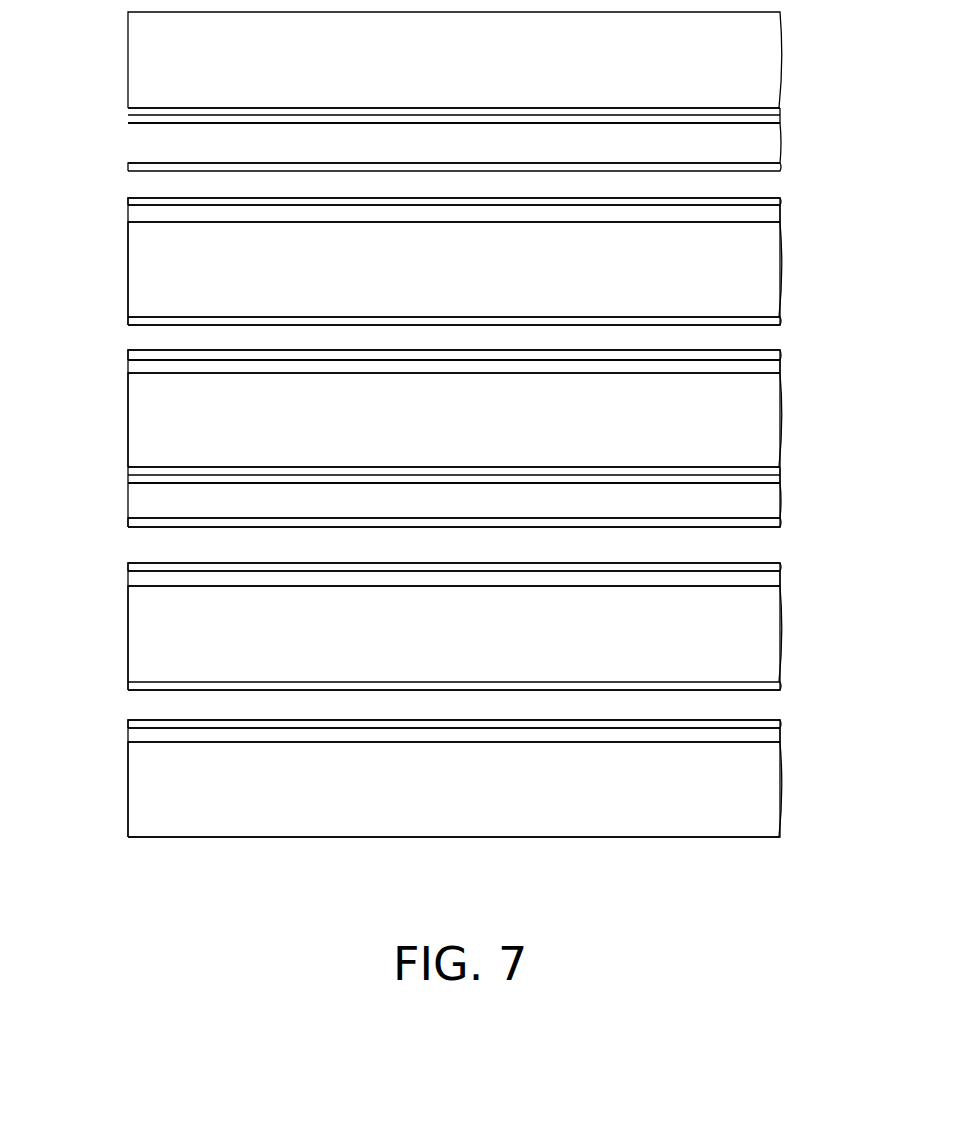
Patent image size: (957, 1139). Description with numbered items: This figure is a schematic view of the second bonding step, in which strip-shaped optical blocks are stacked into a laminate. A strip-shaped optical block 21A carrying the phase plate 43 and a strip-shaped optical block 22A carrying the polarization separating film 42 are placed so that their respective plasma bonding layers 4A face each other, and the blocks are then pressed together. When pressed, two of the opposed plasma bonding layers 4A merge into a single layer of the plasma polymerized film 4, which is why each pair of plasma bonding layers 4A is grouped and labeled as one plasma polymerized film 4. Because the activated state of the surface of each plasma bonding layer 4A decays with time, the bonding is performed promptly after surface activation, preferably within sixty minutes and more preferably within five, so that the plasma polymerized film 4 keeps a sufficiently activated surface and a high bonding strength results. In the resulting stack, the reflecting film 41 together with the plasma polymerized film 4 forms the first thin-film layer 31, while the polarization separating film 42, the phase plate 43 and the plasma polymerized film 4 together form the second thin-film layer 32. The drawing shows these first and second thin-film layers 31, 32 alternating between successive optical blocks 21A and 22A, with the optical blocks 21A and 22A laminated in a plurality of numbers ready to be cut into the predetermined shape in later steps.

The strip-shaped optical block 21A is at (768, 40).
The strip-shaped optical block 22A is at (768, 268).
The plasma bonding layer 4A is at (780, 110).
The plasma polymerized film 4 is at (848, 75).
The phase plate 43 is at (770, 143).
The polarization separating film 42 is at (772, 211).
The reflecting film 41 is at (772, 366).
The first thin-film layer 31 is at (118, 339).
The second thin-film layer 32 is at (118, 184).